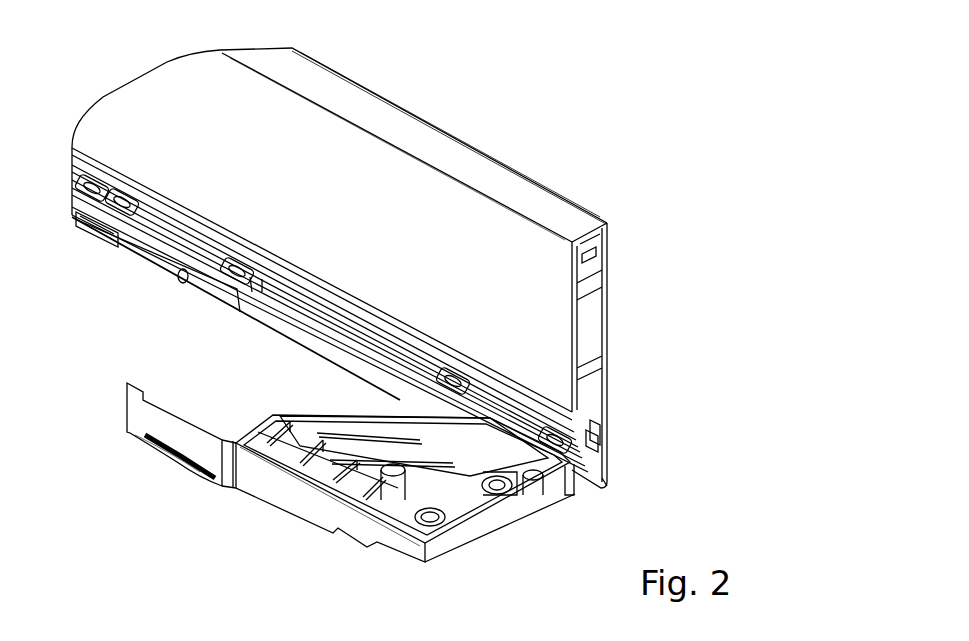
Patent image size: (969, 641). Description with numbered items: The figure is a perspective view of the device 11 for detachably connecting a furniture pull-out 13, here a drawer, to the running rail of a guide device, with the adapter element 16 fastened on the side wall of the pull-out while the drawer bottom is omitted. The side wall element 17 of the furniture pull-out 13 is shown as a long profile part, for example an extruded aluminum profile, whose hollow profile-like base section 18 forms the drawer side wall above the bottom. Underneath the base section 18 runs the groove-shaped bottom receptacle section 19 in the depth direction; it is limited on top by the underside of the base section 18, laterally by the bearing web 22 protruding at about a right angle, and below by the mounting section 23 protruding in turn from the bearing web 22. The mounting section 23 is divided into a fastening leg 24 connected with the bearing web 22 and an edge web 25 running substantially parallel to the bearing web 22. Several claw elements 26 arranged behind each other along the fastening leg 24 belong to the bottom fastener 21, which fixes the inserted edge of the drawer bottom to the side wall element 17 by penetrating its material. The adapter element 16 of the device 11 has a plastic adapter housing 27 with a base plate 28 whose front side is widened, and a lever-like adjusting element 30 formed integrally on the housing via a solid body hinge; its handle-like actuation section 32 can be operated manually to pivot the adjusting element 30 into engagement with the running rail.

The device 11 is at (464, 94).
The furniture pull-out 13 is at (502, 157).
The side wall element 17 is at (557, 187).
The base section 18 is at (345, 221).
The fastening leg 24 is at (90, 187).
The claw elements 26 is at (240, 272).
The bottom fastener 21 is at (453, 380).
The bearing web 22 is at (603, 423).
The bottom receptacle section 19 is at (592, 440).
The mounting section 23 is at (604, 489).
The adapter element 16 is at (414, 564).
The adapter housing 27 is at (292, 522).
The base plate 28 is at (412, 423).
The edge web 25 is at (565, 488).
The actuation section 32 is at (140, 412).
The adjusting element 30 is at (167, 450).